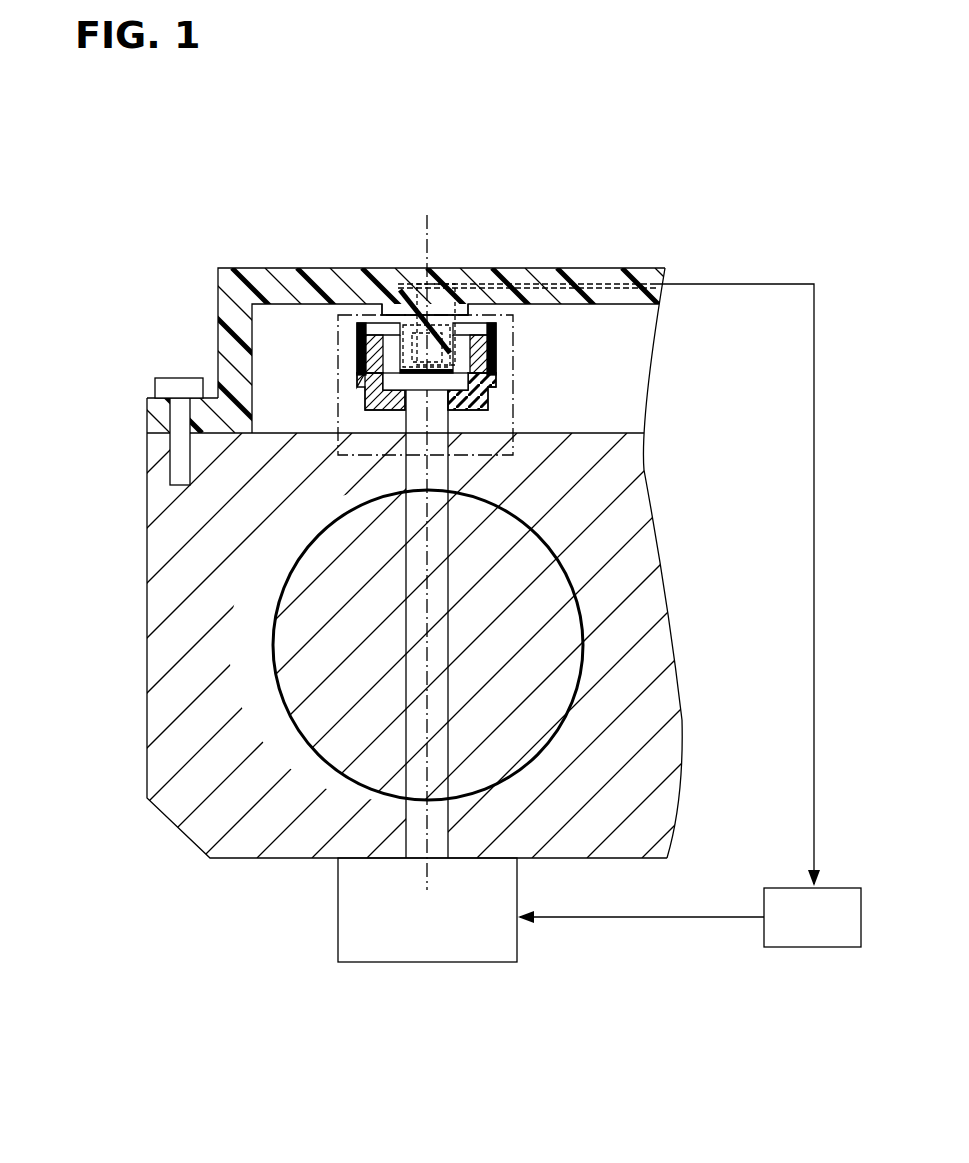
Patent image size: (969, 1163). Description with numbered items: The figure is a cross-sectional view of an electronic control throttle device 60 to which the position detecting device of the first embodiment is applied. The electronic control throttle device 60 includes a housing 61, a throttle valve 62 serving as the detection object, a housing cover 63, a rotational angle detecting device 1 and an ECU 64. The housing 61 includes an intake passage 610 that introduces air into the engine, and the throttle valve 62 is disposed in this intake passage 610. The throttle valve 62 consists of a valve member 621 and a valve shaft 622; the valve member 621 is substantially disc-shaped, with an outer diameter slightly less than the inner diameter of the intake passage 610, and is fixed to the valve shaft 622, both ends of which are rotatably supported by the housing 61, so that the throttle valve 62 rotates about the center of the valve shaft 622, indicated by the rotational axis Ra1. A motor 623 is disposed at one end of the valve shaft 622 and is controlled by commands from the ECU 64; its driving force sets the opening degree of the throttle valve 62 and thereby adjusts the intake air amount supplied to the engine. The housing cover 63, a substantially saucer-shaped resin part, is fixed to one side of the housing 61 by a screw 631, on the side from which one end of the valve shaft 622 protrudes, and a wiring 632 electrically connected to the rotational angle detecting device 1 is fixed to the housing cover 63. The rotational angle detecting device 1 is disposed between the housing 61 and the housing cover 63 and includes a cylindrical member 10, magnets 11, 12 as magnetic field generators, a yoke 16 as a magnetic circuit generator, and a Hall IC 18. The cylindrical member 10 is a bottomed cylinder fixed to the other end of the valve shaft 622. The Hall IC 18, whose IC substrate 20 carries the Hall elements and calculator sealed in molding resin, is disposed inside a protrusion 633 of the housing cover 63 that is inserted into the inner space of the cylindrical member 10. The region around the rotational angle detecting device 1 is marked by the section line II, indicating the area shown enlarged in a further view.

The rotational angle detecting device 1 is at (350, 344).
The cylindrical member 10 is at (483, 400).
The magnet 11 is at (355, 362).
The magnet 12 is at (462, 350).
The yoke 16 is at (472, 343).
The Hall IC 18 is at (352, 330).
The IC substrate 20 is at (386, 325).
The electronic control throttle device 60 is at (156, 290).
The housing 61 is at (162, 773).
The throttle valve 62 is at (268, 597).
The housing cover 63 is at (447, 272).
The ECU 64 is at (764, 935).
The intake passage 610 is at (548, 553).
The valve member 621 is at (312, 617).
The valve shaft 622 is at (405, 735).
The motor 623 is at (370, 912).
The screw 631 is at (166, 392).
The wiring 632 is at (518, 284).
The protrusion 633 is at (472, 313).
The section line II is at (478, 310).
The rotation axis Ra1 is at (427, 653).